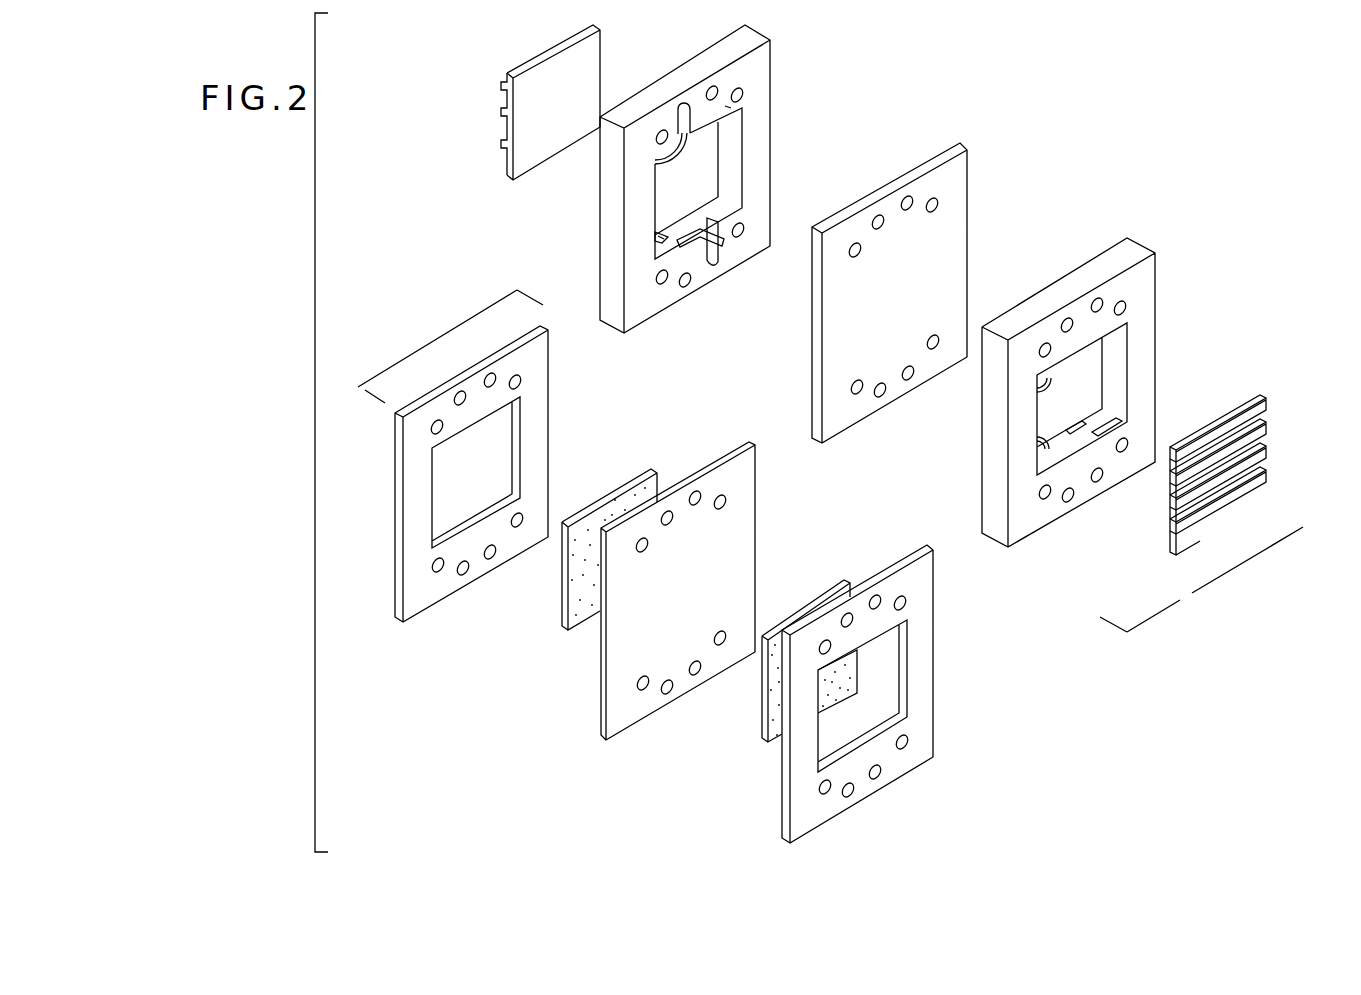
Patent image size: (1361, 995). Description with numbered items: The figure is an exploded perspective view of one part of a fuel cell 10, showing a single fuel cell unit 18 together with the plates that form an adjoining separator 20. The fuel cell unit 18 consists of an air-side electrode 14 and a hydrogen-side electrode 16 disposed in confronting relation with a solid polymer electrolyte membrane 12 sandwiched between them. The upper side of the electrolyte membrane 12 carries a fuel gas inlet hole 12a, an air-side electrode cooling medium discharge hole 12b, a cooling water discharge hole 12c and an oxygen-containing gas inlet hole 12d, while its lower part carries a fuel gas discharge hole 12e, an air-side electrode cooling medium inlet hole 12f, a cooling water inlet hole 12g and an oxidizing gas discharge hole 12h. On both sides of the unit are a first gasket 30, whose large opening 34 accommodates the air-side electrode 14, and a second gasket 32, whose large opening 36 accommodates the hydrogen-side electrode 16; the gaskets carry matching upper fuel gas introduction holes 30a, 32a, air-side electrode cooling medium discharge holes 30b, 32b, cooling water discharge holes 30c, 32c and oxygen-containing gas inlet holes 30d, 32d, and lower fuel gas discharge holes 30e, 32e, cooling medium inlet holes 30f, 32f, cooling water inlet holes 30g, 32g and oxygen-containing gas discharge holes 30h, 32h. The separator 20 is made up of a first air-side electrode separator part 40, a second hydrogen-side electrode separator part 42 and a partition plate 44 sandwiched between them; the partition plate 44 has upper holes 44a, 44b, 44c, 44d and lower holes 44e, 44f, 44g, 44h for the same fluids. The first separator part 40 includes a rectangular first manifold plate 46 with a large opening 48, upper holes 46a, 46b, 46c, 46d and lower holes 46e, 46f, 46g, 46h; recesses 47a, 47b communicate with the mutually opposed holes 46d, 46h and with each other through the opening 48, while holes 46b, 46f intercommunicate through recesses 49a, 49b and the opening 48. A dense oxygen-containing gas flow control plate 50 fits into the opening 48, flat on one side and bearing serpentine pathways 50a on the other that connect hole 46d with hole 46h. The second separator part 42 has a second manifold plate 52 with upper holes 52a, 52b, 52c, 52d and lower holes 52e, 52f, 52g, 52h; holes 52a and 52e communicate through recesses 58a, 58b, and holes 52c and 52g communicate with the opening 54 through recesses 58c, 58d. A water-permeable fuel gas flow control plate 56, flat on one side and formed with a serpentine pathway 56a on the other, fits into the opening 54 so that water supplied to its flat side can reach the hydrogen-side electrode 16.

The fuel cell 10 is at (926, 82).
The solid polymer electrolyte membrane 12 is at (701, 583).
The fuel gas inlet hole 12a is at (726, 499).
The air-side electrode cooling medium discharge hole 12b is at (693, 488).
The cooling water discharge hole 12c is at (675, 521).
The oxygen-containing gas inlet hole 12d is at (649, 554).
The fuel gas discharge hole 12e is at (640, 676).
The air-side electrode cooling medium inlet hole 12f is at (667, 678).
The cooling water inlet hole 12g is at (694, 678).
The oxidizing gas discharge hole 12h is at (694, 615).
The air-side electrode 14 is at (612, 494).
The hydrogen-side electrode 16 is at (767, 733).
The fuel cell unit 18 is at (708, 436).
The separator 20 is at (1008, 150).
The first gasket 30 is at (468, 479).
The fuel gas introduction hole 30a is at (523, 381).
The air-side electrode cooling medium discharge hole 30b is at (490, 370).
The cooling water discharge hole 30c is at (460, 389).
The oxygen-containing gas inlet hole 30d is at (436, 418).
The fuel gas discharge hole 30e is at (432, 568).
The air-side electrode cooling medium inlet hole 30f is at (462, 578).
The cooling water inlet hole 30g is at (490, 562).
The oxygen-containing gas discharge hole 30h is at (517, 530).
The second gasket 32 is at (852, 675).
The fuel gas introduction hole 32a is at (908, 603).
The air-side electrode cooling medium discharge hole 32b is at (875, 593).
The cooling water discharge hole 32c is at (846, 611).
The oxygen-containing gas inlet hole 32d is at (823, 639).
The fuel gas discharge hole 32e is at (816, 789).
The air-side electrode cooling medium inlet hole 32f is at (856, 791).
The cooling water inlet hole 32g is at (884, 772).
The oxygen-containing gas discharge hole 32h is at (911, 743).
The large opening 34 is at (463, 476).
The large opening 36 is at (863, 718).
The first air-side electrode separator part 40 is at (1147, 222).
The second hydrogen-side electrode separator part 42 is at (818, 84).
The partition plate 44 is at (905, 275).
The fuel gas inlet hole 44a is at (933, 197).
The air-side electrode cooling medium discharge hole 44b is at (907, 195).
The cooling water discharge hole 44c is at (877, 214).
The oxygen-containing gas inlet hole 44d is at (853, 242).
The fuel gas discharge hole 44e is at (818, 375).
The air-side electrode cooling medium inlet hole 44f is at (880, 382).
The cooling water inlet hole 44g is at (908, 365).
The oxygen-containing gas discharge hole 44h is at (933, 334).
The first manifold plate 46 is at (1066, 399).
The fuel gas inlet hole 46a is at (1127, 306).
The air-side electrode cooling medium discharge hole 46b is at (1096, 297).
The cooling water discharge hole 46c is at (1067, 317).
The oxygen-containing gas inlet hole 46d is at (1045, 342).
The fuel gas outlet hole 46e is at (1044, 503).
The air-side electrode cooling medium inlet hole 46f is at (1070, 505).
The cooling water inlet hole 46g is at (1099, 487).
The oxygen-containing gas discharge hole 46h is at (1125, 456).
The recess 47a is at (1042, 390).
The recess 47b is at (1112, 424).
The large opening 48 is at (1063, 397).
The recess 49a is at (1100, 320).
The recess 49b is at (1040, 443).
The oxygen-containing gas flow control plate 50 is at (1253, 475).
The serpentine pathways 50a is at (1268, 476).
The second manifold plate 52 is at (681, 183).
The fuel gas inlet hole 52a is at (742, 90).
The air-side electrode cooling medium discharge hole 52b is at (710, 85).
The cooling water discharge hole 52c is at (679, 104).
The oxygen-containing gas inlet hole 52d is at (659, 129).
The fuel gas discharge hole 52e is at (663, 286).
The air-side electrode cooling medium inlet hole 52f is at (688, 289).
The cooling water inlet hole 52g is at (714, 266).
The oxygen-containing gas discharge hole 52h is at (742, 239).
The opening 54 is at (676, 189).
The fuel gas flow control plate 56 is at (509, 93).
The serpentine pathway 56a is at (500, 136).
The recess 58a is at (732, 107).
The recess 58b is at (656, 233).
The recess 58c is at (656, 165).
The recess 58d is at (706, 232).